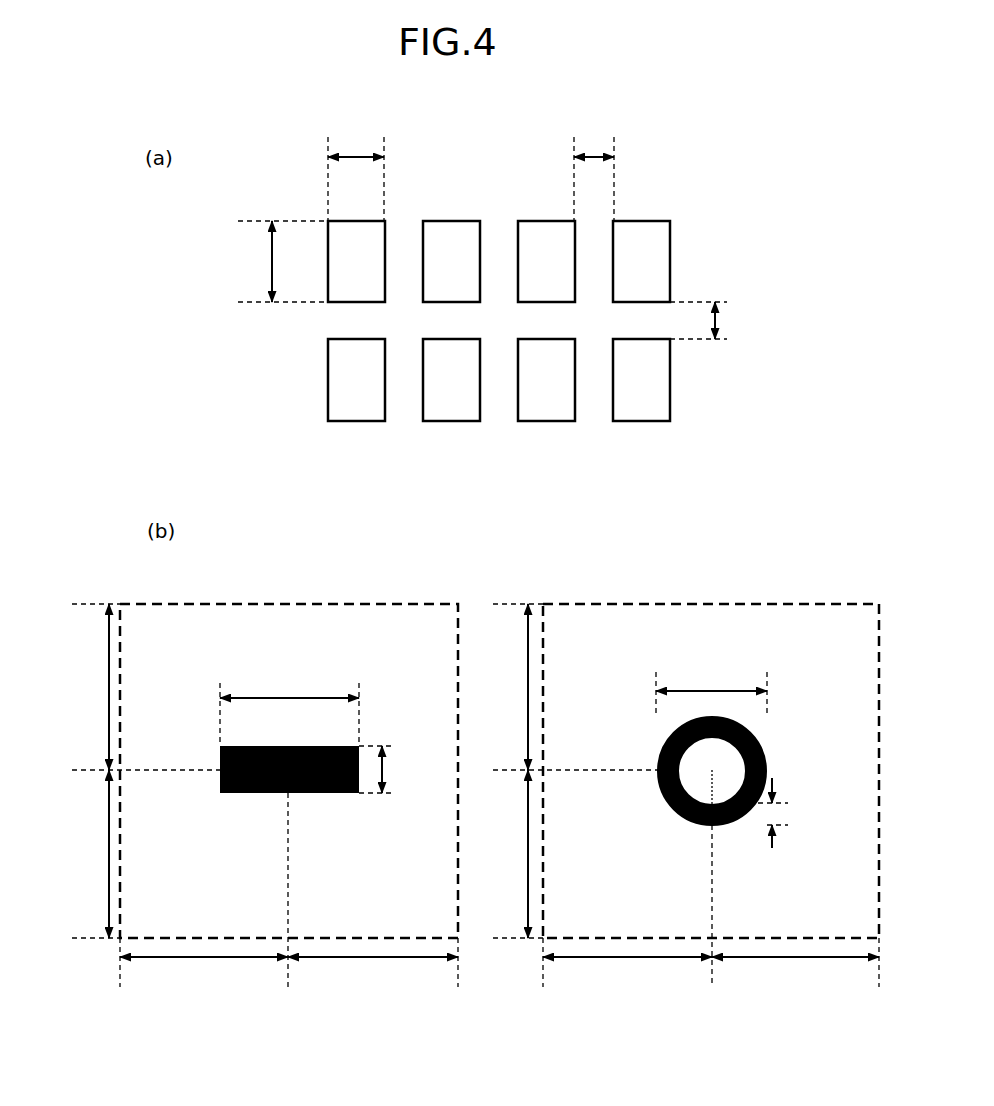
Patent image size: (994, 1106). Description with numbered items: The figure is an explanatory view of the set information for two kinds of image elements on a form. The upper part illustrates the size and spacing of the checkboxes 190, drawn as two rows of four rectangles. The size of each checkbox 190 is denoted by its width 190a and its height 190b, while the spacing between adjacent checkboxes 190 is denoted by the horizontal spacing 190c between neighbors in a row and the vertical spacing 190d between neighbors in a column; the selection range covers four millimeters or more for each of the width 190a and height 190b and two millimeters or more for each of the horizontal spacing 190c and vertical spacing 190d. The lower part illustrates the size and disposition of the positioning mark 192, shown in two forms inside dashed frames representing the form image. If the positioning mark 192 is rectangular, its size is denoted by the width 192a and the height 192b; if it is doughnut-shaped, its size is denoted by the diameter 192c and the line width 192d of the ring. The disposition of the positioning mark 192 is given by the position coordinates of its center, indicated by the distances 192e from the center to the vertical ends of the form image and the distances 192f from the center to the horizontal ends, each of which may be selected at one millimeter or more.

The checkbox 190 is at (368, 421).
The width 190a is at (356, 157).
The height 190b is at (272, 250).
The horizontal spacing 190c is at (594, 157).
The vertical spacing 190d is at (715, 321).
The positioning mark 192 is at (668, 805).
The width 192a is at (290, 698).
The height 192b is at (382, 768).
The diameter 192c is at (713, 691).
The line width 192d is at (776, 813).
The distance 192e is at (528, 839).
The distance 192f is at (793, 960).